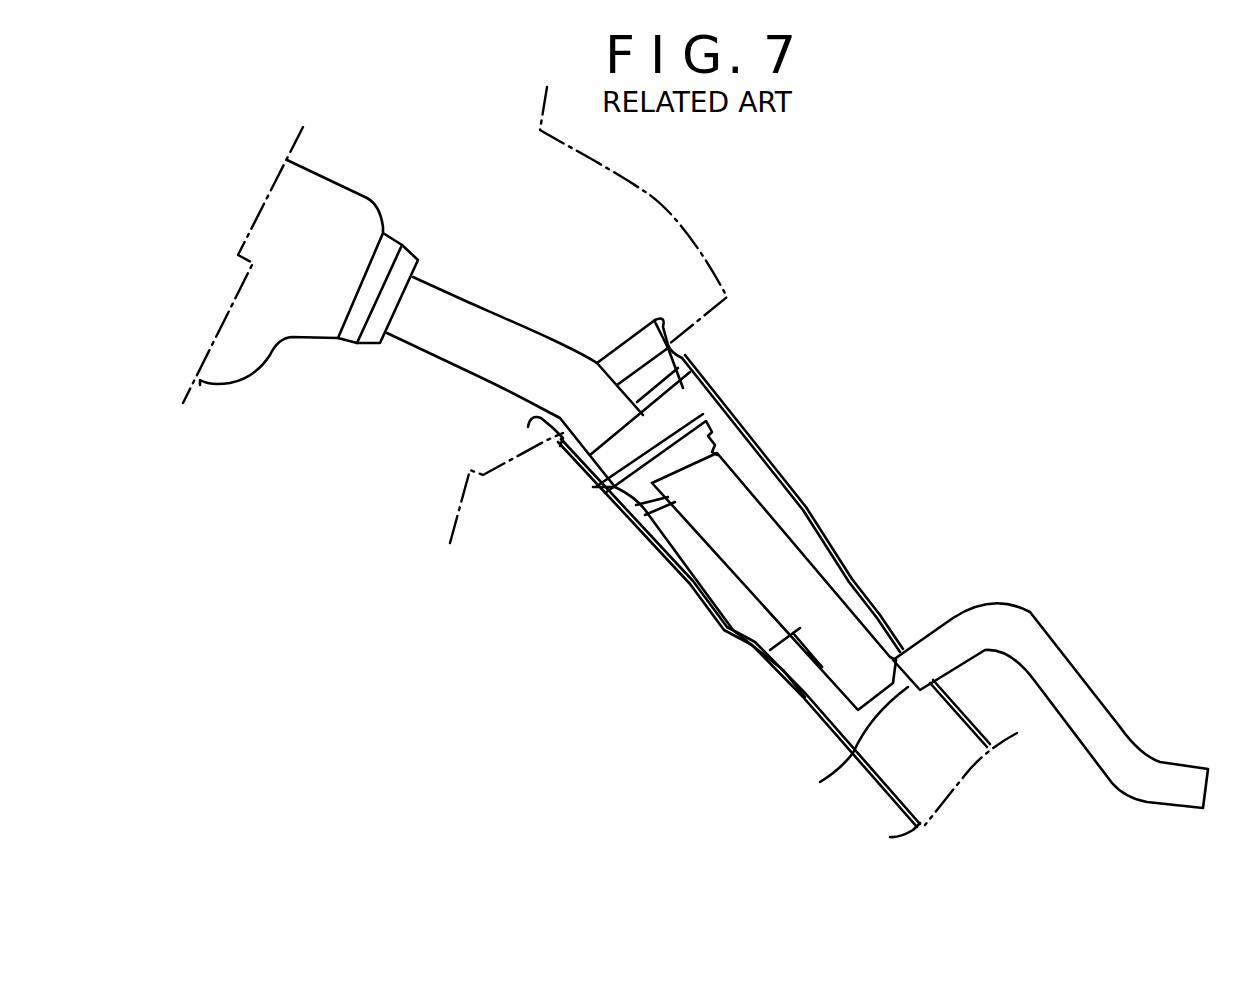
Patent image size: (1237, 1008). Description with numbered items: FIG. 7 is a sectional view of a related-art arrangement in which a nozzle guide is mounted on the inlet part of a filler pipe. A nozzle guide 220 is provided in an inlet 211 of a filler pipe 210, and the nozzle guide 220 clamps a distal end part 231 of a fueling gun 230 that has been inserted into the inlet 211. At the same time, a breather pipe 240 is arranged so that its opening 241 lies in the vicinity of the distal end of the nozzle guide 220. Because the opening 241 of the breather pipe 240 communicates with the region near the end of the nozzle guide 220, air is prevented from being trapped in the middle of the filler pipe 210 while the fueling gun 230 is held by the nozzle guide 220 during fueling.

The filler pipe 210 is at (778, 468).
The inlet 211 is at (662, 570).
The nozzle guide 220 is at (837, 637).
The fueling gun 230 is at (300, 343).
The distal end part 231 is at (447, 363).
The breather pipe 240 is at (1051, 627).
The opening 241 is at (852, 755).